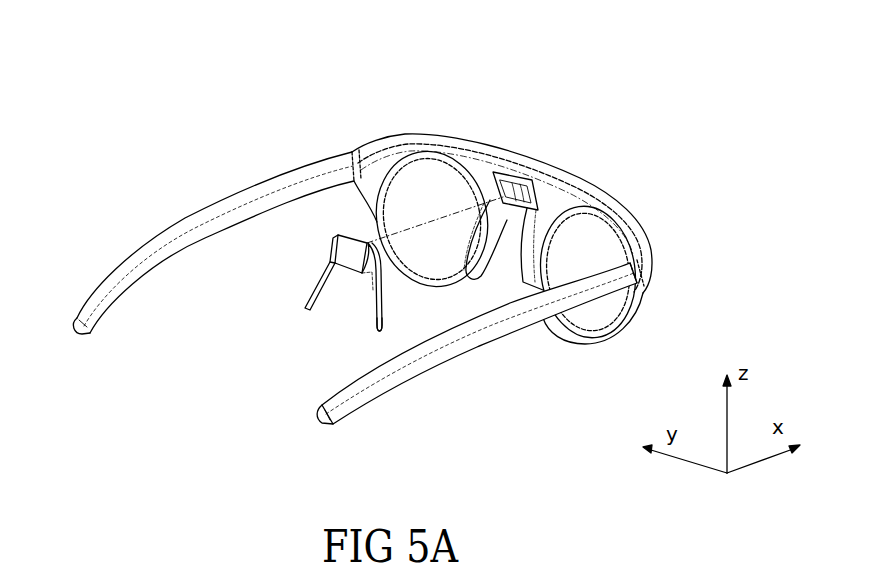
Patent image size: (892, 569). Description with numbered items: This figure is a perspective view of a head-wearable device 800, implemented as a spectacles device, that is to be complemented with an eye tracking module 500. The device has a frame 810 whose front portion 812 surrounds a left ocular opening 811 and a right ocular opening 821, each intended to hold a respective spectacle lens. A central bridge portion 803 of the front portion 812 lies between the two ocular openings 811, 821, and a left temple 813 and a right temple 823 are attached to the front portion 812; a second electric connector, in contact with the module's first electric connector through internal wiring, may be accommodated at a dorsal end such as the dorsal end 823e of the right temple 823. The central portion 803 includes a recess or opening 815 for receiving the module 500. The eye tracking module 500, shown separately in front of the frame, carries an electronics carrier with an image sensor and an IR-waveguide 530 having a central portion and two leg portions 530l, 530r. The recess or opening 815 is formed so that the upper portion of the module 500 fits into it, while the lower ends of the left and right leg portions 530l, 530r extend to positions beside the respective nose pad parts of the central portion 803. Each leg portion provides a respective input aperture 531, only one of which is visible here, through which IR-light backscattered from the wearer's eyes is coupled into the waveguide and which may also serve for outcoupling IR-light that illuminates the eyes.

The head-wearable device 800 is at (427, 84).
The frame 810 is at (598, 150).
The front portion 812 is at (386, 137).
The central (bridge) portion 803 is at (540, 150).
The left ocular opening 811 is at (421, 193).
The recess or opening 815 is at (501, 162).
The right ocular opening 821 is at (599, 311).
The left temple 813 is at (231, 182).
The right temple 823 is at (398, 405).
The dorsal end 823e is at (318, 427).
The eye tracking module 500 is at (306, 262).
The IR-waveguide 530 is at (223, 320).
The left leg portion 530l is at (304, 295).
The right leg portion 530r is at (353, 313).
The input aperture 531 is at (359, 331).